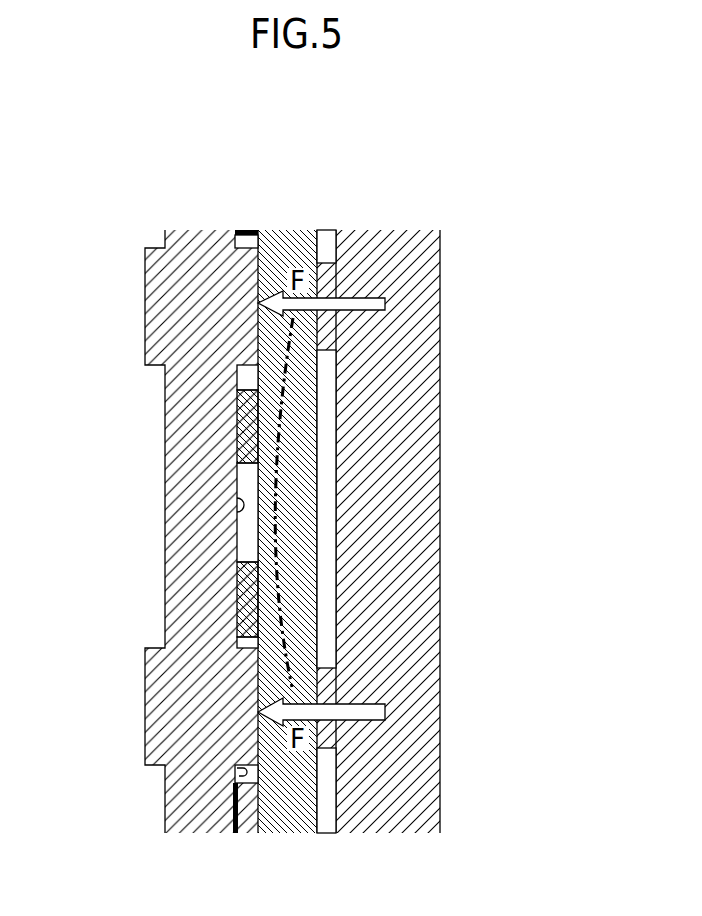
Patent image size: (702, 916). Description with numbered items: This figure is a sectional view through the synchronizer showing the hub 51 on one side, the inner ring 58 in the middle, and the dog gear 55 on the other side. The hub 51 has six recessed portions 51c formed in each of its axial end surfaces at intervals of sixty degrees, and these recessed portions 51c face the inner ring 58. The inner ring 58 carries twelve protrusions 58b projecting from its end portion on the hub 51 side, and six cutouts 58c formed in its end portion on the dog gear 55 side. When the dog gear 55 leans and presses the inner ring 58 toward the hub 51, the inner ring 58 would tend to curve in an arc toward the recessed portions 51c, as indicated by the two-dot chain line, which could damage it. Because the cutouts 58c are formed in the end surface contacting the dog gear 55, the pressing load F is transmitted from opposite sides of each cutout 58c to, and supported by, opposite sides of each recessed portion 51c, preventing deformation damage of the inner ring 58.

The hub 51 is at (205, 228).
The recessed portions 51c is at (240, 513).
The dog gear 55 is at (367, 228).
The inner ring 58 is at (286, 228).
The protrusions 58b is at (237, 433).
The cutouts 58c is at (317, 252).